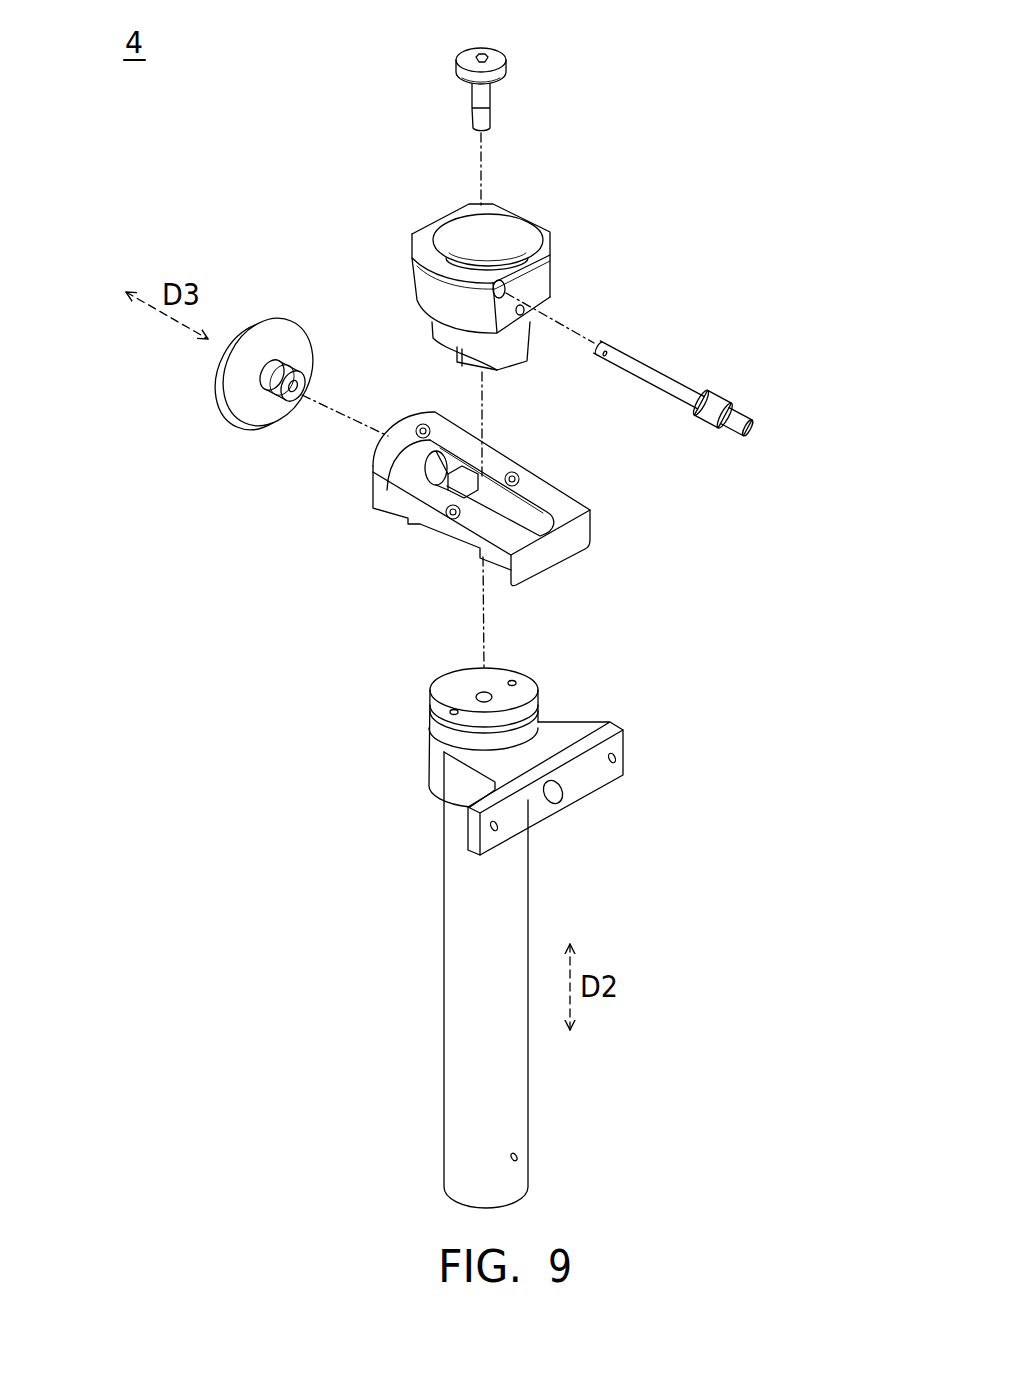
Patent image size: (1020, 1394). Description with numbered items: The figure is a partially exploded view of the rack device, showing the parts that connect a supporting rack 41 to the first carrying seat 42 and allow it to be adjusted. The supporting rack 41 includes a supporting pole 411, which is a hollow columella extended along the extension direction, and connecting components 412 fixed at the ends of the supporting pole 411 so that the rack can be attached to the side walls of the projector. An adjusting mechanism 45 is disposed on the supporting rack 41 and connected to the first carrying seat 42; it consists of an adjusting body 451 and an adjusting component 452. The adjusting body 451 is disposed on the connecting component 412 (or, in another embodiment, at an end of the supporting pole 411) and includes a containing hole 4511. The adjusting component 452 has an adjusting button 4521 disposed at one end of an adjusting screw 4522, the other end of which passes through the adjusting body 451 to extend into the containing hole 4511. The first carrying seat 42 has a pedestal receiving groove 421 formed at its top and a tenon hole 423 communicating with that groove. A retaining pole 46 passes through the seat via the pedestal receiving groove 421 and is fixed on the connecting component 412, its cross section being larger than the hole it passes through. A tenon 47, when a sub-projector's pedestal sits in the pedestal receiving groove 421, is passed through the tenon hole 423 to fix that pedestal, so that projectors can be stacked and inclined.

The supporting rack 41 is at (479, 899).
The supporting pole 411 is at (453, 970).
The connecting component 412 is at (458, 690).
The first carrying seat 42 is at (541, 251).
The pedestal receiving groove 421 is at (513, 230).
The tenon hole 423 is at (506, 288).
The adjusting mechanism 45 is at (222, 380).
The adjusting body 451 is at (538, 444).
The containing hole 4511 is at (510, 516).
The adjusting component 452 is at (222, 330).
The adjusting button 4521 is at (276, 320).
The adjusting screw 4522 is at (437, 462).
The retaining pole 46 is at (518, 68).
The tenon 47 is at (660, 383).